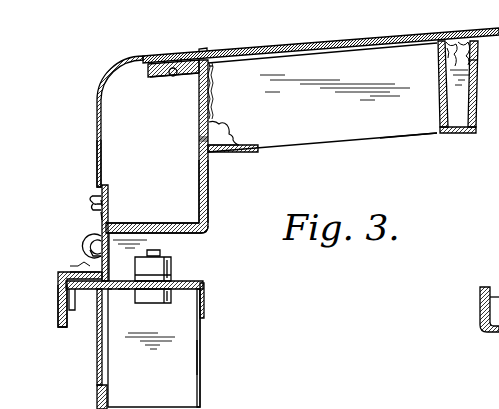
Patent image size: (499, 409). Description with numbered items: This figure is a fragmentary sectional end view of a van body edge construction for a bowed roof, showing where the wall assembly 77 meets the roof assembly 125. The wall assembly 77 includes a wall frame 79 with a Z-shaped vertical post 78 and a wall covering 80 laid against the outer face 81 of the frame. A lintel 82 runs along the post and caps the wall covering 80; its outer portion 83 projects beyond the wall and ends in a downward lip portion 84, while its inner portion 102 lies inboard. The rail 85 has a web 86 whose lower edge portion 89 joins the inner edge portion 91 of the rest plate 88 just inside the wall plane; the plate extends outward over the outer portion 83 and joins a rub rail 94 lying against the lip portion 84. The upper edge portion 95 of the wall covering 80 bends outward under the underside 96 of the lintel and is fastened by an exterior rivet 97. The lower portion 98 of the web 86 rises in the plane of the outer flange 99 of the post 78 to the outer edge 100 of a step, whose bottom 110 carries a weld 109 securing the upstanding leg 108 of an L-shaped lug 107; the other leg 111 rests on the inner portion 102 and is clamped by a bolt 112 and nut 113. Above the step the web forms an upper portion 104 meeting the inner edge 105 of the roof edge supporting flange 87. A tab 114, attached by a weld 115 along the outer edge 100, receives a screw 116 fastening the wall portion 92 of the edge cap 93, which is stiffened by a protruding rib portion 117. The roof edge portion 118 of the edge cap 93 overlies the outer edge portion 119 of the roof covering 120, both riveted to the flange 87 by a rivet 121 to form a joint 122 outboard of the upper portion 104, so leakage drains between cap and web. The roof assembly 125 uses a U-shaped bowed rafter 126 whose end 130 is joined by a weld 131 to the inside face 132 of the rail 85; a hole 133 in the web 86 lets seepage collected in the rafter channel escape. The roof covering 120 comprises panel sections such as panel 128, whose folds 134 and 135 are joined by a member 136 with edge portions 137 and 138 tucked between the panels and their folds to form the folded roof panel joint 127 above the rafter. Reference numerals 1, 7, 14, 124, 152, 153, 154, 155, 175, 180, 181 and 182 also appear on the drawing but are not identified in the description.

The trailer body 7 is at (353, 405).
The floor 14 is at (491, 365).
The wall assembly 77 is at (200, 331).
The vertical post 78 is at (200, 350).
The wall frame 79 is at (200, 366).
The wall covering 80 is at (97, 366).
The outer face 81 is at (97, 393).
The lintel 82 is at (204, 300).
The outer portion 83 is at (62, 272).
The lip portion 84 is at (58, 301).
The rail 85 is at (208, 193).
The web portion 86 is at (208, 224).
The roof edge supporting flange portion 87 is at (156, 78).
The rest plate portion 88 is at (70, 266).
The lower edge portion 89 is at (126, 292).
The inner edge portion 91 is at (114, 296).
The wall portion 92 is at (97, 178).
The edge cap 93 is at (97, 125).
The rub rail 94 is at (58, 284).
The upper edge portion 95 is at (64, 327).
The underside 96 is at (72, 312).
The rivet 97 is at (88, 254).
The lower portion 98 is at (86, 240).
The outer flange 99 is at (108, 362).
The outer edge 100 is at (110, 220).
The inner portion 102 is at (172, 276).
The upper portion 104 is at (208, 178).
The inner edge 105 is at (213, 68).
The L-shaped lug 107 is at (196, 253).
The upstanding leg 108 is at (196, 262).
The weld 109 is at (184, 234).
The bottom 110 is at (165, 236).
The leg 111 is at (203, 285).
The bolt 112 is at (158, 303).
The nut 113 is at (132, 265).
The tab 114 is at (105, 185).
The weld 115 is at (114, 207).
The screw 116 is at (91, 198).
The rib portion 117 is at (93, 208).
The roof edge portion 118 is at (146, 62).
The outer edge portion 119 is at (183, 52).
The roof covering 120 is at (232, 44).
The rivet 121 is at (171, 58).
The joint 122 is at (203, 48).
The roof member 124 is at (477, 27).
The roof assembly 125 is at (338, 143).
The rafter 126 is at (398, 137).
The roof panel joint 127 is at (462, 42).
The panel section 128 is at (446, 40).
The end 130 is at (222, 153).
The weld 131 is at (214, 90).
The inside face 132 is at (225, 121).
The hole 133 is at (199, 140).
The fold 134 is at (443, 70).
The fold 135 is at (478, 52).
The member 136 is at (470, 66).
The edge portion 137 is at (440, 57).
The edge portion 138 is at (478, 60).
The rail 152 is at (498, 276).
The channel 153 is at (480, 318).
The channel flange 154 is at (480, 297).
The rail member 155 is at (491, 153).
The panel 175 is at (490, 175).
The member 180 is at (490, 232).
The member 181 is at (492, 217).
The member 182 is at (489, 257).
The trailer 1 is at (494, 403).